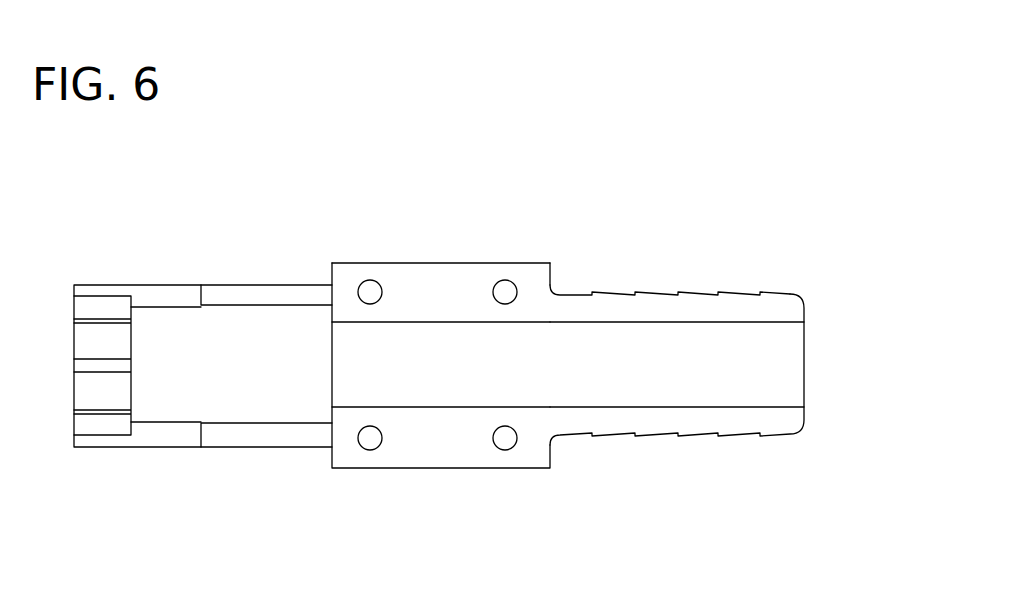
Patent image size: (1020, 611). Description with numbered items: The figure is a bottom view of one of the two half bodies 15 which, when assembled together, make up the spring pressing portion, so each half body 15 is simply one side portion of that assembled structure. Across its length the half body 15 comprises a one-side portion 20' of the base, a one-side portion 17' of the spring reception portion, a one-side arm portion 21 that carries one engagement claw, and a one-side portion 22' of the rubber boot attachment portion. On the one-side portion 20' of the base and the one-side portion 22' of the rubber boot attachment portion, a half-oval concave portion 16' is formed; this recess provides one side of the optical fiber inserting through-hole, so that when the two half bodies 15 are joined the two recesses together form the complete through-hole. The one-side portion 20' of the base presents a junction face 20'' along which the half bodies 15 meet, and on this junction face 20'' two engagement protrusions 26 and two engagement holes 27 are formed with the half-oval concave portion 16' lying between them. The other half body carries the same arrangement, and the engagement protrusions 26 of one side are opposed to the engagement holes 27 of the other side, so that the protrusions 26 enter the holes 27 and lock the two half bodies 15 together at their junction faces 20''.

The half body 15 is at (609, 212).
The half-oval concave portion 16' is at (677, 393).
The one-side portion of the spring reception portion 17' is at (266, 366).
The one-side portion of the base 20' is at (441, 212).
The junction face 20'' is at (441, 372).
The one-side arm portion 21 is at (237, 447).
The one-side portion of the rubber boot attachment portion 22' is at (670, 246).
The engagement protrusion 26 is at (505, 290).
The engagement hole 27 is at (505, 442).